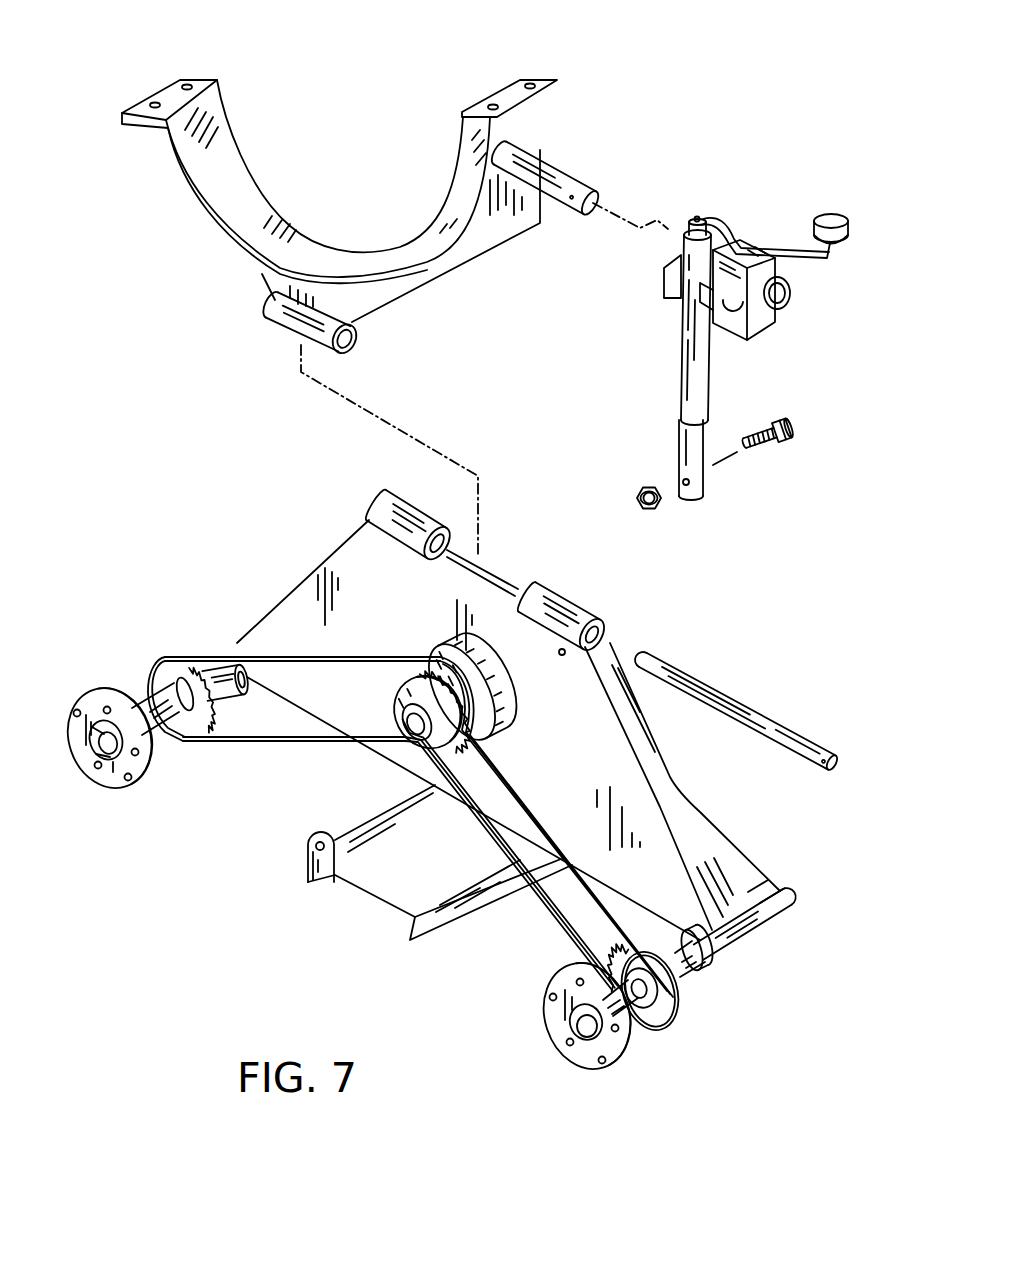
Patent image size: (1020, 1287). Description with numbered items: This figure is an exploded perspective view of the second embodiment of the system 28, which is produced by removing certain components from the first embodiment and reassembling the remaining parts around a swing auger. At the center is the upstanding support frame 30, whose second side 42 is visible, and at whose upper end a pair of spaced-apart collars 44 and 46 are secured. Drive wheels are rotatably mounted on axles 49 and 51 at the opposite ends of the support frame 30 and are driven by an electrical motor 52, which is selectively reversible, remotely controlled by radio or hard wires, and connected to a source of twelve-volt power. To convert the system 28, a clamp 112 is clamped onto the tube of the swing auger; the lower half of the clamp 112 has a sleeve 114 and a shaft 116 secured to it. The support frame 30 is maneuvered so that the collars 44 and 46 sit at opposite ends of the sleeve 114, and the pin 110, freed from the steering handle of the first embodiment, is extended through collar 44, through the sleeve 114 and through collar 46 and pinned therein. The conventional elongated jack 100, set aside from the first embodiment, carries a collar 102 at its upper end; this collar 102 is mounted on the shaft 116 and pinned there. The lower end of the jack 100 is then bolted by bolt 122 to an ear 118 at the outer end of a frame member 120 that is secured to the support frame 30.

The system 28 is at (316, 528).
The support frame 30 is at (650, 802).
The second side 42 is at (473, 754).
The collar 44 is at (550, 602).
The collar 46 is at (418, 512).
The axle 49 is at (757, 927).
The axle 51 is at (212, 677).
The electrical motor 52 is at (500, 700).
The jack 100 is at (666, 347).
The collar 102 is at (784, 308).
The pin 110 is at (735, 703).
The clamp 112 is at (331, 140).
The sleeve 114 is at (362, 335).
The shaft 116 is at (540, 163).
The ear 118 is at (306, 860).
The frame member 120 is at (390, 887).
The bolt 122 is at (772, 444).